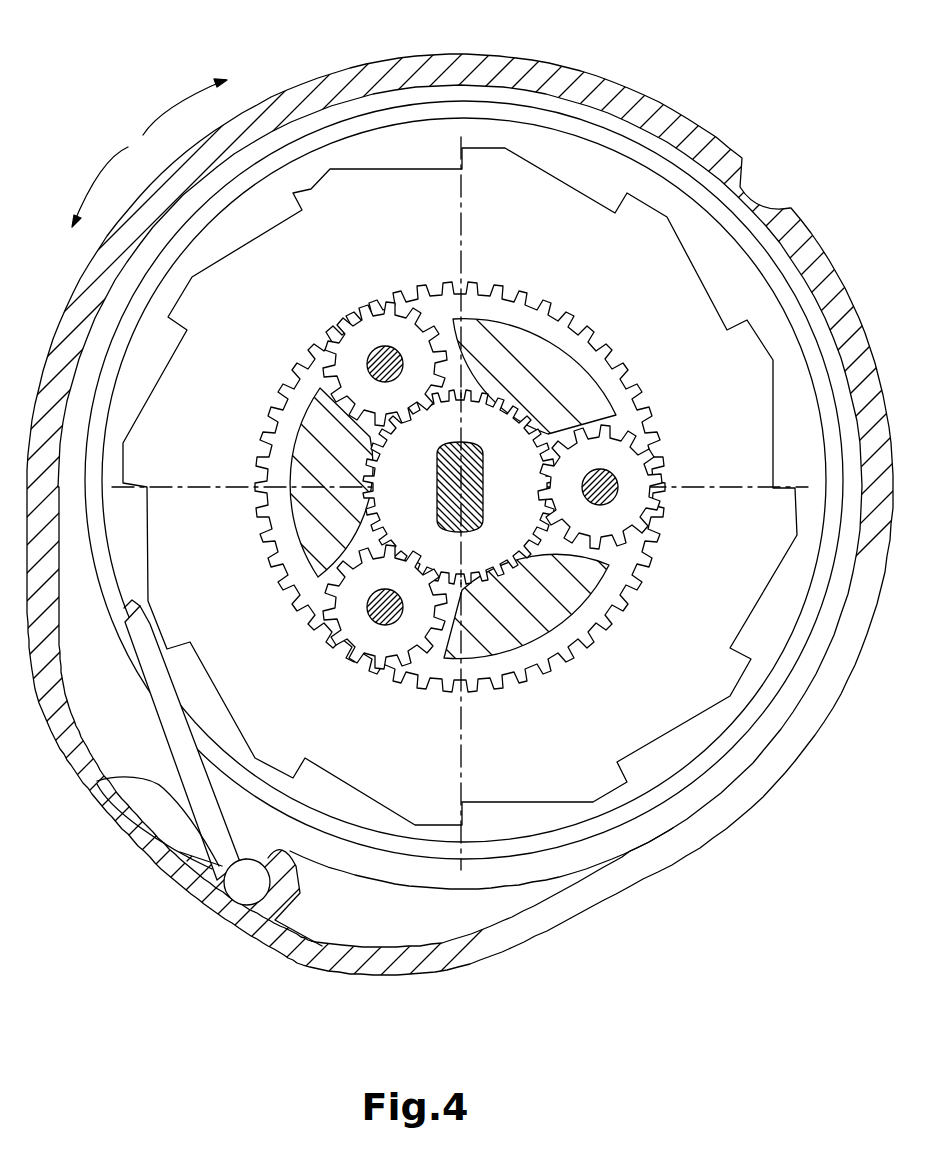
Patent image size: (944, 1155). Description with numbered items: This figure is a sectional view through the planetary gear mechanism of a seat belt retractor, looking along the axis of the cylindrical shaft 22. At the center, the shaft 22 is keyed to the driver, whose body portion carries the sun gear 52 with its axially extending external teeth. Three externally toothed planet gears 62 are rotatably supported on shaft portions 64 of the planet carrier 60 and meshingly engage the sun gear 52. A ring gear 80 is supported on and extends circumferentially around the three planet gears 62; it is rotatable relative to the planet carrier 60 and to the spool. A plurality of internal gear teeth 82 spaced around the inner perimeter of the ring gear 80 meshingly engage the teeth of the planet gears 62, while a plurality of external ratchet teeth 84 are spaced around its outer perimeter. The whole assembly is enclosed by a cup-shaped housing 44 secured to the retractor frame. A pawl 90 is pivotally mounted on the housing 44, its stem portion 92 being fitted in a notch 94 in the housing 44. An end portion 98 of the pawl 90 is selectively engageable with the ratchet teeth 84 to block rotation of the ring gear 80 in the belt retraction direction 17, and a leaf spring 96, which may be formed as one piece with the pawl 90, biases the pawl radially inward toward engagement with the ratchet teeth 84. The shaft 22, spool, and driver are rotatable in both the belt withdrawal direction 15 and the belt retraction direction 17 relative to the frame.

The belt withdrawal direction 15 is at (148, 130).
The belt retraction direction 17 is at (77, 205).
The cylindrical shaft 22 is at (553, 420).
The cup-shaped housing 44 is at (48, 345).
The sun gear 52 is at (480, 464).
The planet carrier 60 is at (557, 335).
The planet gears 62 is at (327, 342).
The shaft portions 64 is at (372, 378).
The ring gear 80 is at (215, 261).
The internal gear teeth 82 is at (482, 428).
The external ratchet teeth 84 is at (300, 196).
The pawl 90 is at (149, 708).
The stem portion 92 is at (240, 884).
The notch 94 is at (235, 915).
The leaf spring 96 is at (160, 788).
The end portion 98 is at (139, 611).